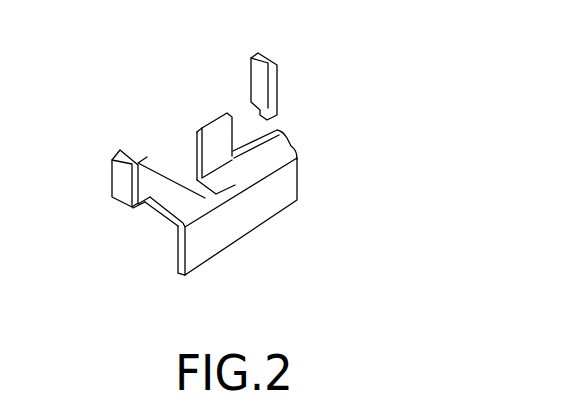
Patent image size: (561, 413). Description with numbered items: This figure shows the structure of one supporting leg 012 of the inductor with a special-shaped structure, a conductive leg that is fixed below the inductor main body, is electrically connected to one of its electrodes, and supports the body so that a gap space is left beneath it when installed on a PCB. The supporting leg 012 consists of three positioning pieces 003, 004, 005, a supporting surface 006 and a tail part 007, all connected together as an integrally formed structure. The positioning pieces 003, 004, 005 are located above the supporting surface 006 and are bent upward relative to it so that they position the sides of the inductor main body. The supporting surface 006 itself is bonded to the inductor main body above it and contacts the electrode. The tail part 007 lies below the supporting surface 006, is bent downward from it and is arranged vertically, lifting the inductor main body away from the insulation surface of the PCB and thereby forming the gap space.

The positioning piece 003 is at (115, 162).
The positioning piece 004 is at (199, 132).
The positioning piece 005 is at (267, 63).
The supporting surface 006 is at (247, 137).
The tail part 007 is at (252, 210).
The supporting leg 012 is at (247, 321).